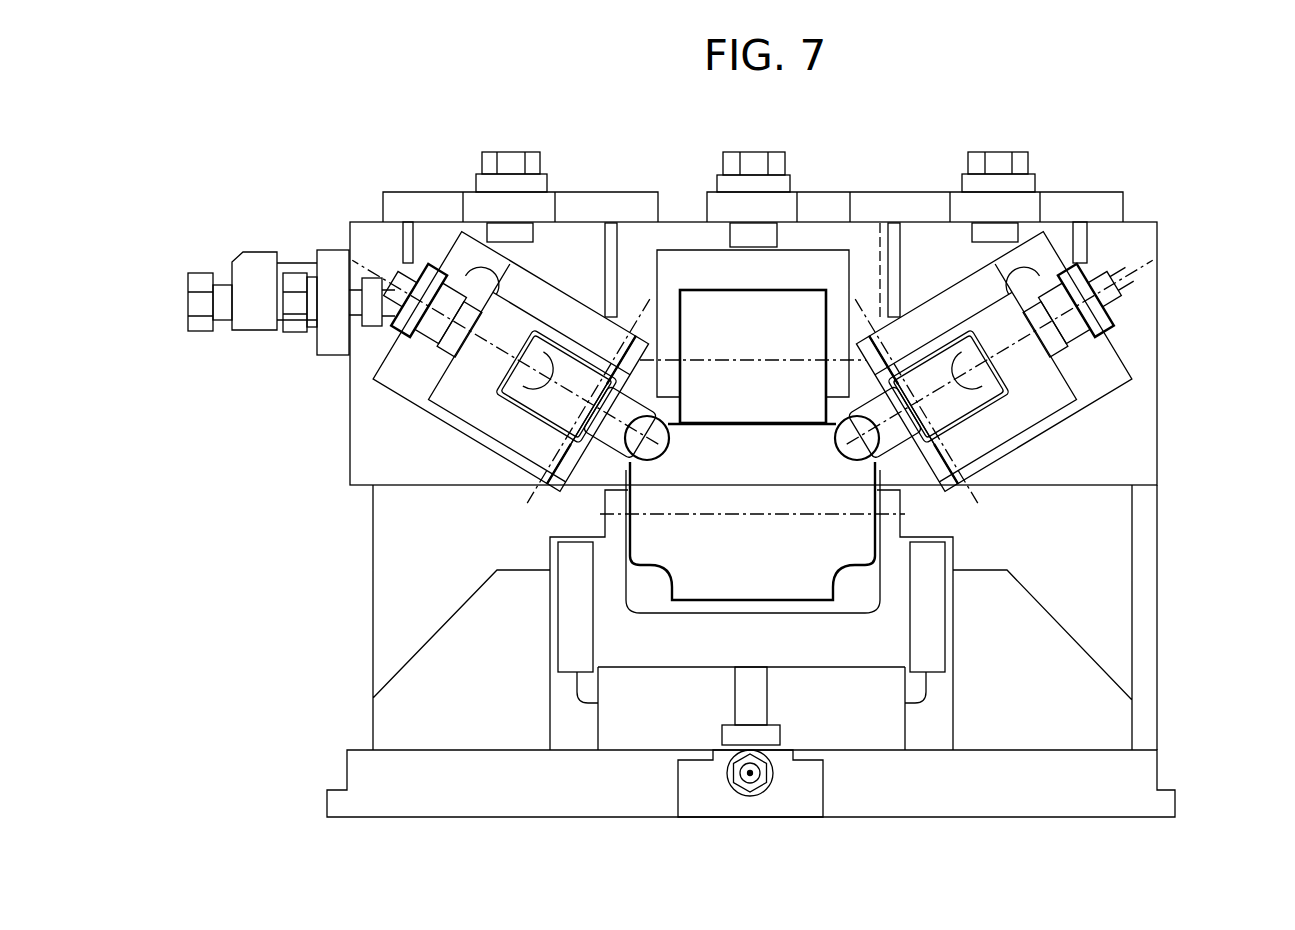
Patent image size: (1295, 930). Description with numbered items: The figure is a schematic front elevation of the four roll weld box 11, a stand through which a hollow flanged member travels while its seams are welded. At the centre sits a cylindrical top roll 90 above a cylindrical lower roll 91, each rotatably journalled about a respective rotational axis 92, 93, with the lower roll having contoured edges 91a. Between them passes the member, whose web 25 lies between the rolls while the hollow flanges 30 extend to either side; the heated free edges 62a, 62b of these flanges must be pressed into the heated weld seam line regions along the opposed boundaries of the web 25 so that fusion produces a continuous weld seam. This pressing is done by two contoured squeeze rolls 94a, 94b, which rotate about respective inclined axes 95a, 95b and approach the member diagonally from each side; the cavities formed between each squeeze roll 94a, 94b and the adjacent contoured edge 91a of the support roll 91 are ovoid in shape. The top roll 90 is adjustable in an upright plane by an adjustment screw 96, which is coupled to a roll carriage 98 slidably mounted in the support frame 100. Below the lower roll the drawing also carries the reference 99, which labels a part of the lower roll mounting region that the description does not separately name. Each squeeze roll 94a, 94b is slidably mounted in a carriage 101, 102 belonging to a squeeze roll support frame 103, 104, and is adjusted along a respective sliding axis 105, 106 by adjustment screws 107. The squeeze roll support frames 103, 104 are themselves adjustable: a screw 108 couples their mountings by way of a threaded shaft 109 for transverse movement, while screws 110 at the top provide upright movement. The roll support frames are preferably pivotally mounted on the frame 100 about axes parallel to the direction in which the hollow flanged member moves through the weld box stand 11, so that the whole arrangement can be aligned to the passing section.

The weld box 11 is at (1084, 156).
The web 25 is at (758, 420).
The hollow flanges 30 is at (672, 427).
The heated free edge 62a is at (652, 460).
The heated free edge 62b is at (850, 460).
The cylindrical top roll 90 is at (758, 343).
The cylindrical lower roll 91 is at (678, 591).
The contoured edges 91a is at (848, 568).
The rotational axis 92 is at (650, 290).
The rotational axis 93 is at (802, 515).
The contoured squeeze roll 94a is at (590, 462).
The contoured squeeze roll 94b is at (920, 470).
The inclined axis 95a is at (600, 262).
The inclined axis 95b is at (870, 300).
The adjustment screw 96 is at (748, 162).
The roll carriage 98 is at (700, 270).
The left jaw block 99 is at (650, 588).
The support frame 100 is at (355, 650).
The carriage 101 is at (485, 363).
The carriage 102 is at (1020, 370).
The squeeze roll support frame 103 is at (470, 262).
The squeeze roll support frame 104 is at (1070, 268).
The sliding axis 105 is at (395, 300).
The sliding axis 106 is at (1025, 300).
The adjustment screws 107 is at (393, 307).
The screw 108 is at (205, 332).
The threaded shaft 109 is at (883, 300).
The screws 110 is at (505, 162).